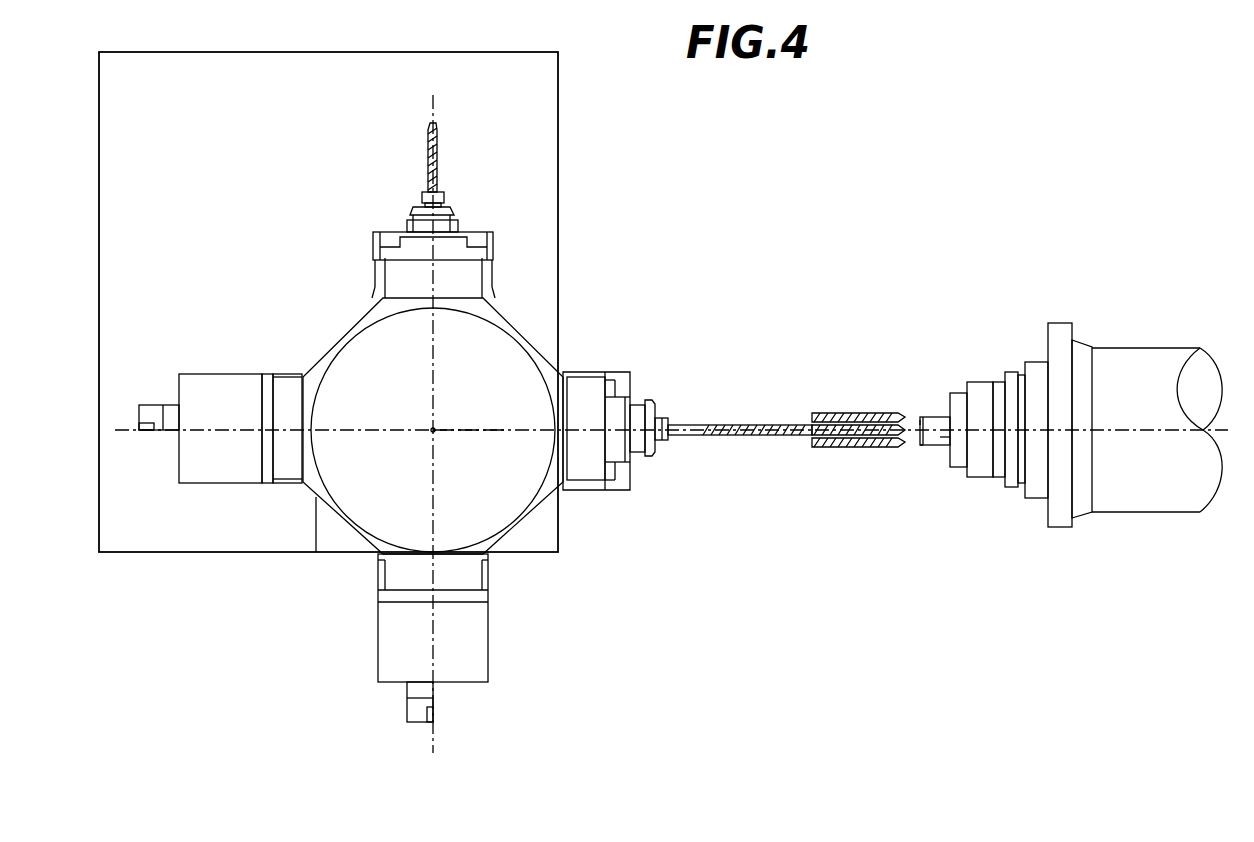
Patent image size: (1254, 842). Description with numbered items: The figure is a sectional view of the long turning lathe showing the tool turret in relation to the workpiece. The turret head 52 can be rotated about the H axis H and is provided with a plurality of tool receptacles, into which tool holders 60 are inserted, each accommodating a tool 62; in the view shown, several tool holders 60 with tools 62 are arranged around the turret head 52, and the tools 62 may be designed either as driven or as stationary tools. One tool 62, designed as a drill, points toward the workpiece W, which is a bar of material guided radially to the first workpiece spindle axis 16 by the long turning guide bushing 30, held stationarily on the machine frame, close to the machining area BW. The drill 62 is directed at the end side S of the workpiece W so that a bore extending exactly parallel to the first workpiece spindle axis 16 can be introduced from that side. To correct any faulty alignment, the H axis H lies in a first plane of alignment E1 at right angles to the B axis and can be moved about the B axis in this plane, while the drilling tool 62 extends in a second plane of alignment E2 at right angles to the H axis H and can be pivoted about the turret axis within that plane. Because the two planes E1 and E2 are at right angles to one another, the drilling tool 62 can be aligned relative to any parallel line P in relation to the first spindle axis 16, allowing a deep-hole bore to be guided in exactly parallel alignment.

The first workpiece spindle axis 16 is at (1140, 432).
The long turning guide bushing 30 is at (1012, 458).
The turret head 52 is at (543, 493).
The tool holder 60 is at (480, 240).
The tool 62 is at (437, 148).
The H axis H is at (433, 428).
The first plane of alignment E1 is at (507, 432).
The second plane of alignment E2 is at (794, 319).
The workpiece W is at (937, 423).
The end side of the workpiece S is at (917, 422).
The parallel line P is at (920, 453).
The machining area BW is at (943, 437).